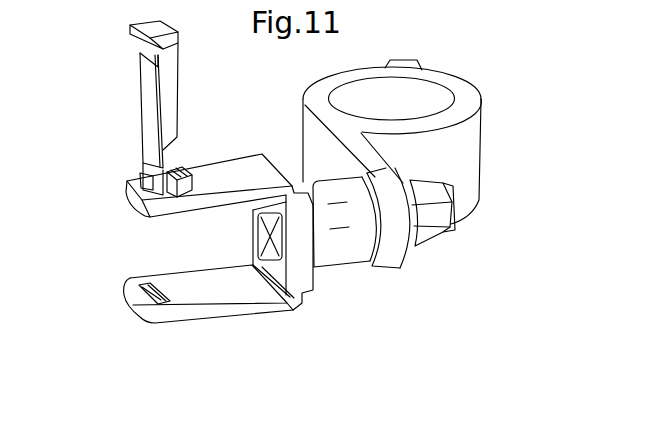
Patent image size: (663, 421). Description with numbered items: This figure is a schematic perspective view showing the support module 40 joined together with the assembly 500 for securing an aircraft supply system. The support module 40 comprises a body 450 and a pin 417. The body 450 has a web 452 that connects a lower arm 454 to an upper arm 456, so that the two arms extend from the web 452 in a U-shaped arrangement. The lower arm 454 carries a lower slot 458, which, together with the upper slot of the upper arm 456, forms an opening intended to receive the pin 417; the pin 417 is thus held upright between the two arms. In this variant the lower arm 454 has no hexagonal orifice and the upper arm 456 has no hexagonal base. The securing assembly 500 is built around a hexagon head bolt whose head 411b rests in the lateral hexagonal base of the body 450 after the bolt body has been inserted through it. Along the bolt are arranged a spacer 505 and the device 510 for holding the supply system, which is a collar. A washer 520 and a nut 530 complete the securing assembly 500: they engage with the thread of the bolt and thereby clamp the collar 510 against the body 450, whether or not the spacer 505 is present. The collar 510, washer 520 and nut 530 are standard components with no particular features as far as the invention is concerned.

The support module 40 is at (139, 109).
The pin 417 is at (131, 98).
The lower slot 458 is at (143, 170).
The body 450 is at (215, 264).
The upper arm 456 is at (228, 163).
The lower arm 454 is at (232, 292).
The web 452 is at (158, 278).
The head 411b is at (276, 294).
The assembly for securing an aircraft supply system 500 is at (460, 229).
The device for holding the supply system 510 is at (467, 92).
The spacer 505 is at (343, 254).
The washer 520 is at (421, 250).
The nut 530 is at (448, 226).